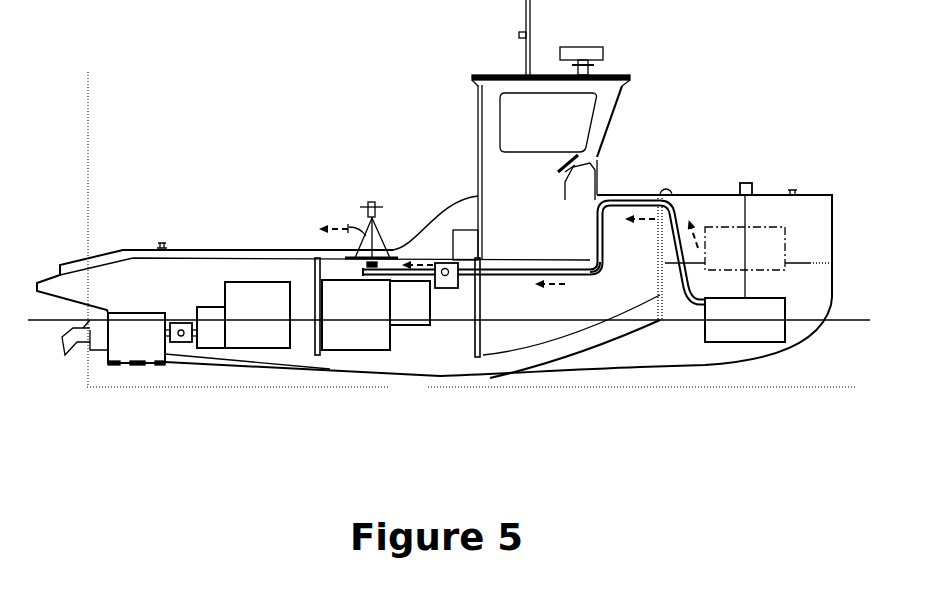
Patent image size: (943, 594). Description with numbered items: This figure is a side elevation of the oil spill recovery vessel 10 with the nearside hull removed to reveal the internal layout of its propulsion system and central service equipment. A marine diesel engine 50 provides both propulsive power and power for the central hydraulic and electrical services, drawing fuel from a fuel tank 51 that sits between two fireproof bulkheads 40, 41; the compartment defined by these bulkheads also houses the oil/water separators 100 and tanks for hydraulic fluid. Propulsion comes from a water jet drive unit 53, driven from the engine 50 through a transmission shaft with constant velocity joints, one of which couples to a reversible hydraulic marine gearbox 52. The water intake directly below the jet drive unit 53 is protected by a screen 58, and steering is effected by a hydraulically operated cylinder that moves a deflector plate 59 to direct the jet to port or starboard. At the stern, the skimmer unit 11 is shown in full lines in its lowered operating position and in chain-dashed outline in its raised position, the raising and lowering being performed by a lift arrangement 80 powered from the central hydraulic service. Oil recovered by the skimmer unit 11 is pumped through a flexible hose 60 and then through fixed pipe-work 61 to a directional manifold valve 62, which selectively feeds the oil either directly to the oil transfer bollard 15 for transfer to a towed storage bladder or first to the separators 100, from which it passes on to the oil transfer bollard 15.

The oil spill recovery vessel 10 is at (198, 153).
The skimmer unit 11 is at (748, 268).
The oil transfer bollard 15 is at (360, 205).
The fireproof bulkhead 40 is at (314, 338).
The fireproof bulkhead 41 is at (480, 338).
The marine diesel engine 50 is at (257, 315).
The fuel tank 51 is at (356, 315).
The reversible hydraulic marine gearbox 52 is at (195, 327).
The water jet drive unit 53 is at (136, 338).
The screen 58 is at (130, 368).
The deflector plate 59 is at (76, 346).
The flexible hose 60 is at (678, 238).
The fixed pipe-work 61 is at (607, 270).
The directional manifold valve 62 is at (445, 288).
The lift arrangement 80 is at (753, 183).
The oil/water separator 100 is at (410, 303).